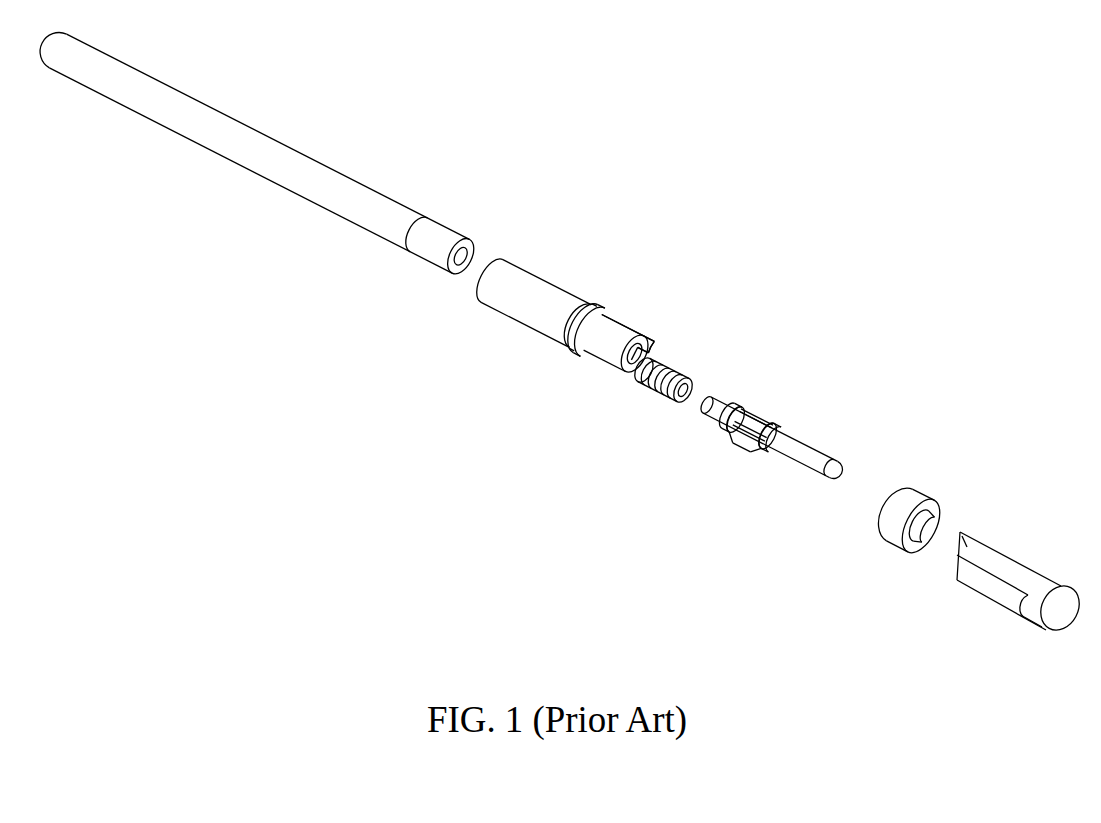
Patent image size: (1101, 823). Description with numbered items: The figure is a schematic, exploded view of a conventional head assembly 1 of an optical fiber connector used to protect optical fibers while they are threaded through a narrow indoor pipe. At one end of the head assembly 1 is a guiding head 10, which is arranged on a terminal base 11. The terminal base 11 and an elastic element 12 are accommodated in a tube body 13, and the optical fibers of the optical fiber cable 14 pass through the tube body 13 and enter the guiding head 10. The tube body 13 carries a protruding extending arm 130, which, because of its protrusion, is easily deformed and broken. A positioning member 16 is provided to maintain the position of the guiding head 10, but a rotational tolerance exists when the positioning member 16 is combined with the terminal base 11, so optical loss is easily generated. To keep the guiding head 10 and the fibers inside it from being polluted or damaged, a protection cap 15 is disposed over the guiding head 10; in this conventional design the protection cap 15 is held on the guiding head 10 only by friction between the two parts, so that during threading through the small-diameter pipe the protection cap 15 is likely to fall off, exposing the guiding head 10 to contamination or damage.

The head assembly 1 is at (657, 111).
The guiding head 10 is at (822, 434).
The terminal base 11 is at (744, 394).
The elastic element 12 is at (657, 393).
The tube body 13 is at (512, 314).
The extending arm 130 is at (637, 312).
The optical fiber cable 14 is at (295, 185).
The protection cap 15 is at (1014, 551).
The positioning member 16 is at (906, 482).